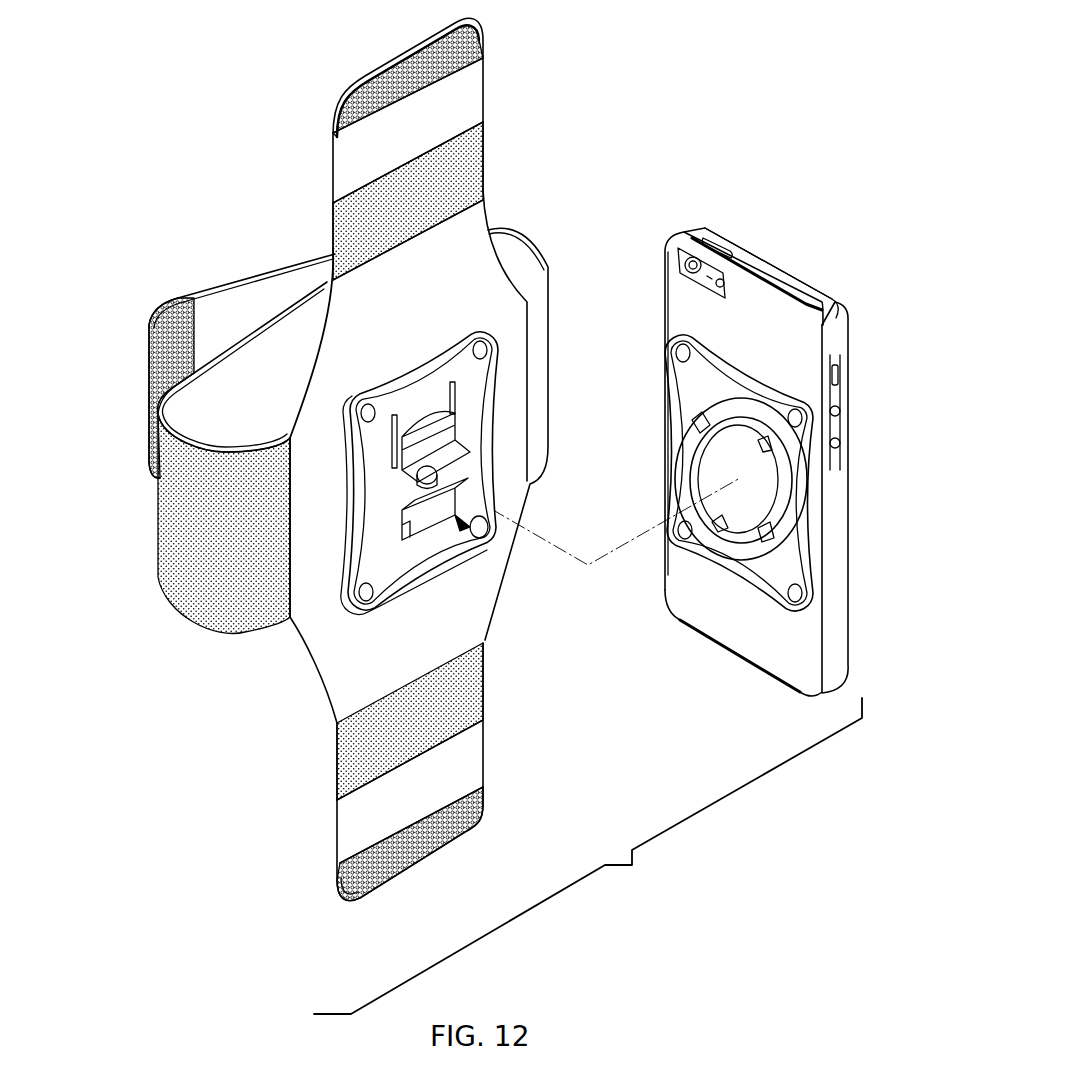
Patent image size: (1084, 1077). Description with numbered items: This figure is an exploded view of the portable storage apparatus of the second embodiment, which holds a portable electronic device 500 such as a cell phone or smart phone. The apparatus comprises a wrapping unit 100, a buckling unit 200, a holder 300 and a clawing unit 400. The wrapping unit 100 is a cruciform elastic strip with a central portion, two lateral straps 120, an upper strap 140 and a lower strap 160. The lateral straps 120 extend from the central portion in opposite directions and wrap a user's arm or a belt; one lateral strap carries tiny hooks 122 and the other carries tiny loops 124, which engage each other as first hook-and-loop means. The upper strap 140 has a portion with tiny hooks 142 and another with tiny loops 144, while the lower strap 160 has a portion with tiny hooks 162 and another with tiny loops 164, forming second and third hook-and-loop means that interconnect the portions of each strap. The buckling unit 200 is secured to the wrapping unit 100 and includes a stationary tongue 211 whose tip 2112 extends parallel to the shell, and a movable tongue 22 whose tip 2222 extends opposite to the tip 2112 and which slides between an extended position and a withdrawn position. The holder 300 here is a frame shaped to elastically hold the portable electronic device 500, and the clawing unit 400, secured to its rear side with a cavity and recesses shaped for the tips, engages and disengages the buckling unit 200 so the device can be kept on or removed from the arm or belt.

The wrapping unit 100 is at (245, 258).
The lateral straps 120 is at (225, 466).
The tiny hooks 122 is at (168, 322).
The tiny loops 124 is at (210, 610).
The upper strap 140 is at (467, 149).
The tiny hooks 142 is at (470, 50).
The tiny loops 144 is at (470, 175).
The lower strap 160 is at (446, 759).
The tiny hooks 162 is at (474, 700).
The tiny loops 164 is at (472, 820).
The buckling unit 200 is at (481, 455).
The stationary tongue 211 is at (485, 538).
The tip 2112 is at (425, 535).
The movable tongue 22 is at (465, 428).
The tip 2222 is at (458, 384).
The holder 300 is at (730, 435).
The clawing unit 400 is at (731, 572).
The portable electronic device 500 is at (775, 272).